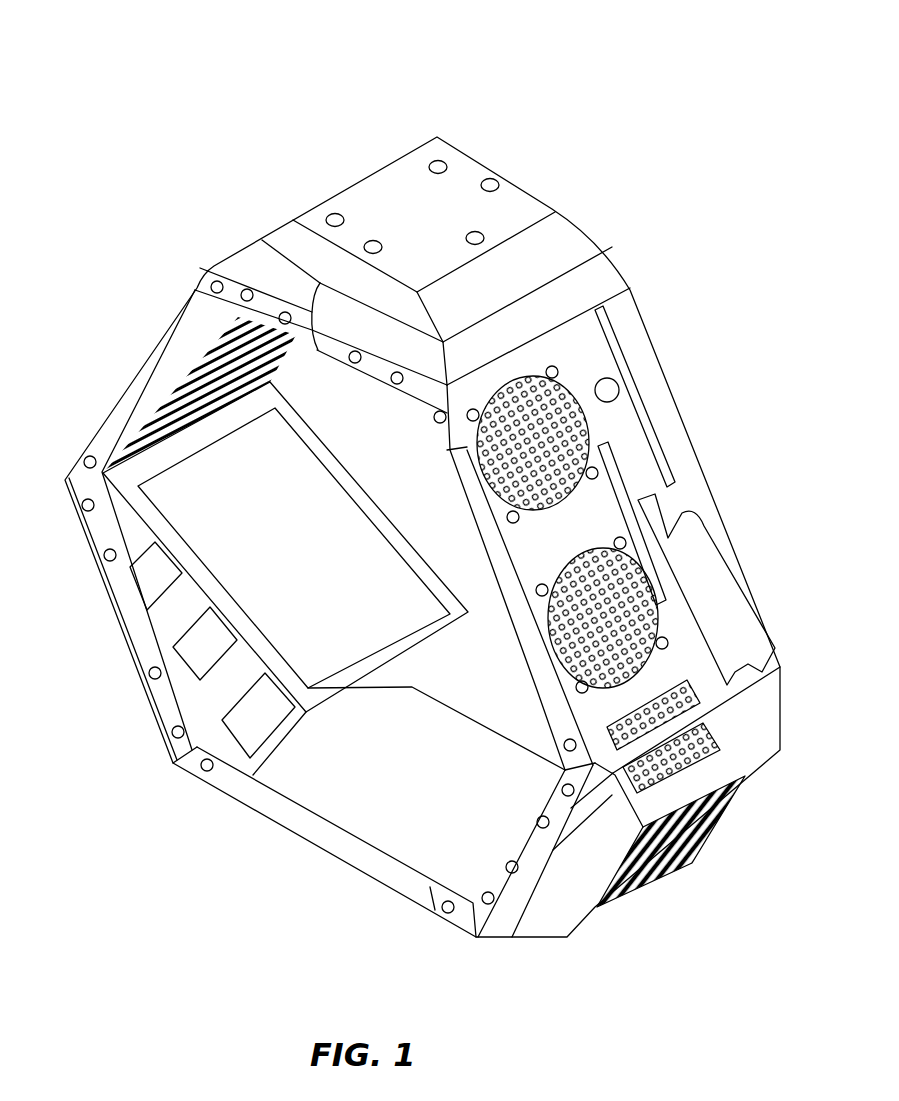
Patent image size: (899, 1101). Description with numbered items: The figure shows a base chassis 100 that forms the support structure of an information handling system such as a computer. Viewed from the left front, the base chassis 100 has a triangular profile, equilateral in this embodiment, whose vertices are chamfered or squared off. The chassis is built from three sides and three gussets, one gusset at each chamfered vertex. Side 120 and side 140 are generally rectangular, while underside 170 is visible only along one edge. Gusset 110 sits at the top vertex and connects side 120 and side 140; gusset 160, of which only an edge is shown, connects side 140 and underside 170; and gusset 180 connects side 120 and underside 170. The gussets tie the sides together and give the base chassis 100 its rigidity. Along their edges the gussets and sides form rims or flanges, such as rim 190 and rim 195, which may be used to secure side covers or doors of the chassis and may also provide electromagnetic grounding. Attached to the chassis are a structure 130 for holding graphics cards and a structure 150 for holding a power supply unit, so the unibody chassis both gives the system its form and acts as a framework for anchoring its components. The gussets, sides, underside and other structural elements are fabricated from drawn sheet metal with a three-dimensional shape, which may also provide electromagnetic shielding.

The base chassis 100 is at (718, 100).
The gusset 110 is at (523, 210).
The side 120 is at (687, 492).
The structure for holding graphics cards 130 is at (218, 340).
The side 140 is at (112, 398).
The structure for holding a power supply unit 150 is at (133, 527).
The gusset 160 is at (110, 620).
The underside 170 is at (310, 858).
The gusset 180 is at (590, 915).
The rim 190 is at (223, 273).
The rim 195 is at (477, 913).